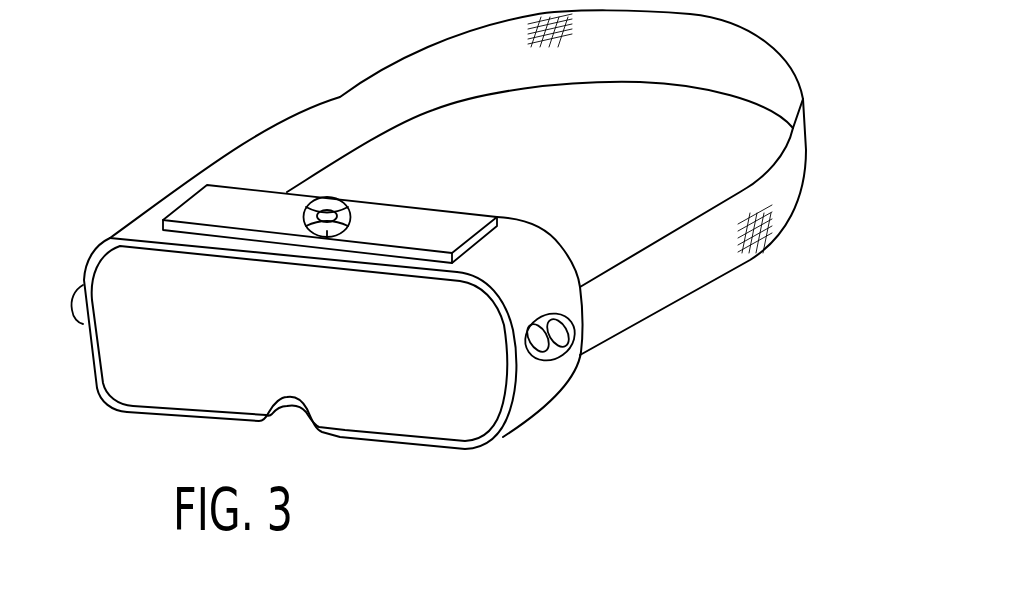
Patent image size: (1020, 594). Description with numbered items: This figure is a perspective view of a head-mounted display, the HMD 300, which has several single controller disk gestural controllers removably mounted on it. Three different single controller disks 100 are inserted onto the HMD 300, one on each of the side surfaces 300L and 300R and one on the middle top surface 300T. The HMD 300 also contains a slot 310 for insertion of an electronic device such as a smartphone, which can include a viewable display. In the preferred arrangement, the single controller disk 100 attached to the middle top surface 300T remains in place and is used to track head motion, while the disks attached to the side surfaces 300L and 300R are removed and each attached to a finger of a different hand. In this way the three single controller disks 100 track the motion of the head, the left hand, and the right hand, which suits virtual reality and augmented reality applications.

The HMD 300 is at (177, 55).
The left side surface 300L is at (82, 277).
The middle top surface 300T is at (447, 220).
The right side surface 300R is at (540, 383).
The slot 310 is at (170, 210).
The single controller disk 100 is at (342, 190).